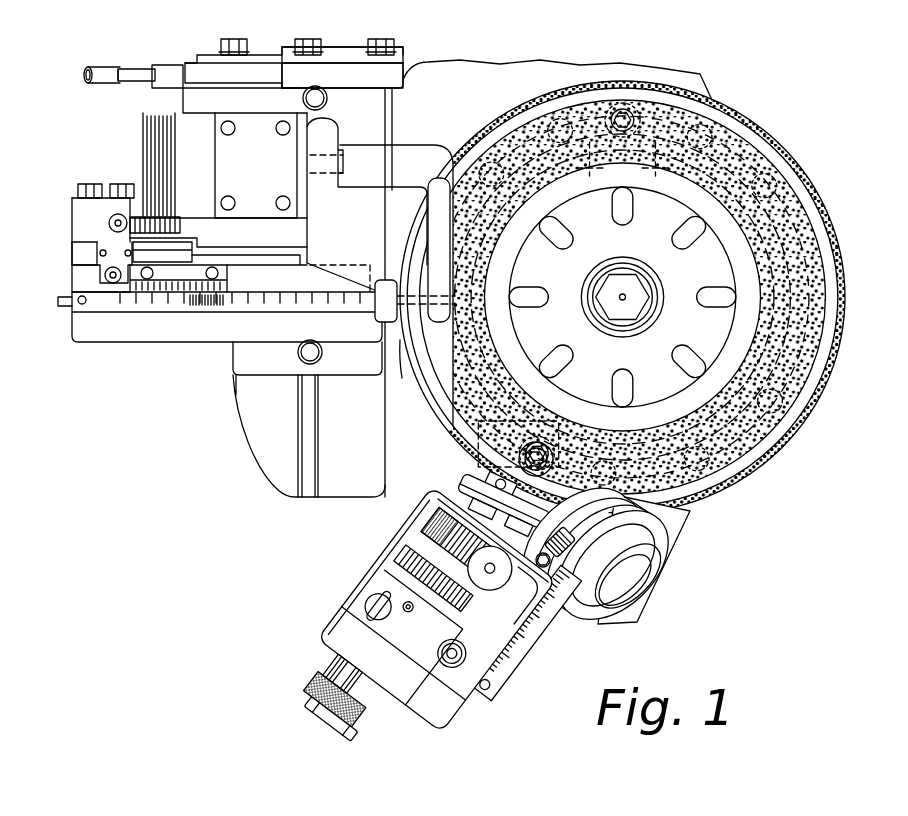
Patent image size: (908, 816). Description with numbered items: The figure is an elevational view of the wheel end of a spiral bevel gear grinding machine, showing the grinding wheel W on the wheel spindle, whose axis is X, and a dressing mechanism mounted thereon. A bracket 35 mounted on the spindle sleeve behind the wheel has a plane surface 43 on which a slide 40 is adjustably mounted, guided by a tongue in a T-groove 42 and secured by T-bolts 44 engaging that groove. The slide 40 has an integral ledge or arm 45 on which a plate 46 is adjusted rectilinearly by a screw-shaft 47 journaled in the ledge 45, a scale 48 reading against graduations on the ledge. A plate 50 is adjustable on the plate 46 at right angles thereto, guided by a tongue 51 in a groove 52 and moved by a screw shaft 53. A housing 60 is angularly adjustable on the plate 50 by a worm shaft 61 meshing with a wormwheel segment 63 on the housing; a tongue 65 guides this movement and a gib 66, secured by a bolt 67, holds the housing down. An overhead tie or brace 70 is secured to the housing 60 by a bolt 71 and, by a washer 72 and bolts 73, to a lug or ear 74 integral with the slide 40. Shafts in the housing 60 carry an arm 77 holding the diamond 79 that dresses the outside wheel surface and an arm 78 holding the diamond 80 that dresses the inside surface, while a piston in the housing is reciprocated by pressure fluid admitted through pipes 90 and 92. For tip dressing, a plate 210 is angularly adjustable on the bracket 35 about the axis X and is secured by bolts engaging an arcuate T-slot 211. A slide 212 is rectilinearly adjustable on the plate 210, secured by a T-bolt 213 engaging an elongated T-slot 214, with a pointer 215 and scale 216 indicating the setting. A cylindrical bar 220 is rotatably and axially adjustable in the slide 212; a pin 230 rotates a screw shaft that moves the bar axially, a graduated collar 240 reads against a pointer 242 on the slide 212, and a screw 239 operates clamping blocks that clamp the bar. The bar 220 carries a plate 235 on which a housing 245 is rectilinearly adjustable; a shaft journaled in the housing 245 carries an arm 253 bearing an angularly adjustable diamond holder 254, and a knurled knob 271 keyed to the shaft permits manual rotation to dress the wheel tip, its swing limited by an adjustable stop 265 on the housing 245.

The bracket 35 is at (505, 70).
The slide 40 is at (388, 131).
The T-groove 42 is at (298, 480).
The plane surface 43 is at (340, 470).
The T-bolts 44 is at (305, 360).
The ledge or arm 45 is at (148, 330).
The plate 46 is at (75, 279).
The screw-shaft 47 is at (62, 303).
The slide 48 is at (228, 281).
The plate 50 is at (75, 250).
The tongue 51 is at (176, 262).
The groove 52 is at (142, 258).
The screw shaft 53 is at (112, 285).
The housing 60 is at (143, 130).
The worm shaft 61 is at (110, 221).
The wormwheel segment 63 is at (128, 200).
The tongue 65 is at (200, 244).
The gib 66 is at (76, 222).
The bolt 67 is at (88, 183).
The overhead tie or brace 70 is at (266, 58).
The bolt 71 is at (237, 39).
The washer 72 is at (400, 52).
The bolts 73 is at (374, 39).
The lug or ear 74 is at (395, 80).
The arm 77 is at (345, 250).
The arm 78 is at (430, 147).
The diamond 79 is at (403, 360).
The diamond 80 is at (438, 296).
The pipe 90 is at (106, 68).
The pipe 92 is at (143, 69).
The plate 210 is at (372, 560).
The arcuate T-slot 211 is at (425, 498).
The slide 212 is at (425, 712).
The T-bolt 213 is at (440, 665).
The elongated T-slot 214 is at (492, 600).
The pointer 215 is at (476, 690).
The scale 216 is at (508, 670).
The cylindrical bar 220 is at (330, 665).
The pin 230 is at (348, 745).
The plate 235 is at (485, 550).
The screw 239 is at (365, 605).
The collar 240 is at (410, 538).
The pointer 242 is at (408, 612).
The housing 245 is at (558, 556).
The arm 253 is at (488, 484).
The diamond holder 254 is at (488, 466).
The adjustable stop 265 is at (543, 568).
The knurled knob 271 is at (652, 536).
The grinding wheel W is at (840, 368).
The axis X is at (627, 296).